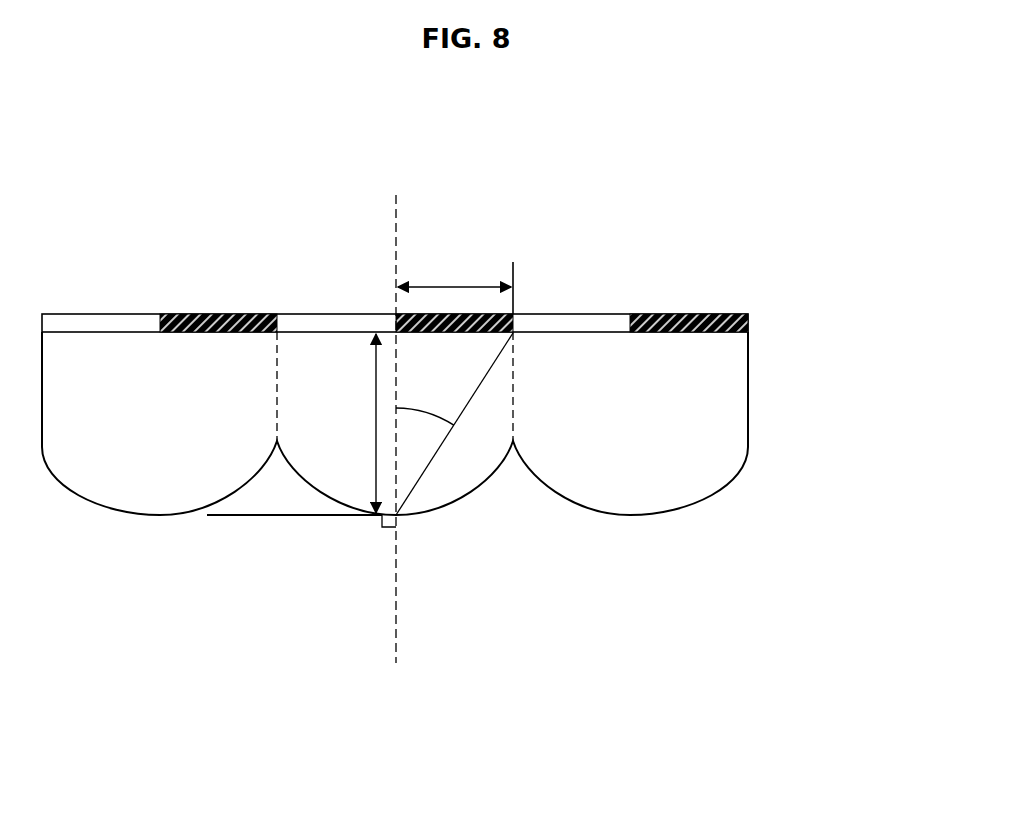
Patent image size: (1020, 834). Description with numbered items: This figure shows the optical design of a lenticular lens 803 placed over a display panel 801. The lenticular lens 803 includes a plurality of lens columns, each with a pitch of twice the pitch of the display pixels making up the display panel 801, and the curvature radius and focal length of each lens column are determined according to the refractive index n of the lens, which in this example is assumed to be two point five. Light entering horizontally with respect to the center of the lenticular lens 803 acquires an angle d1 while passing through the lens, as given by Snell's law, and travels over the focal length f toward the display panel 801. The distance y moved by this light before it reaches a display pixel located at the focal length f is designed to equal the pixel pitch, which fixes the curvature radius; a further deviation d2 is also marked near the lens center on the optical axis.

The display panel 801 is at (700, 313).
The lenticular lens 803 is at (474, 423).
The refractive index n is at (642, 450).
The distance y is at (455, 280).
The focal length f is at (363, 423).
The angle δ1 d1 is at (454, 424).
The offset δ2 d2 is at (301, 549).